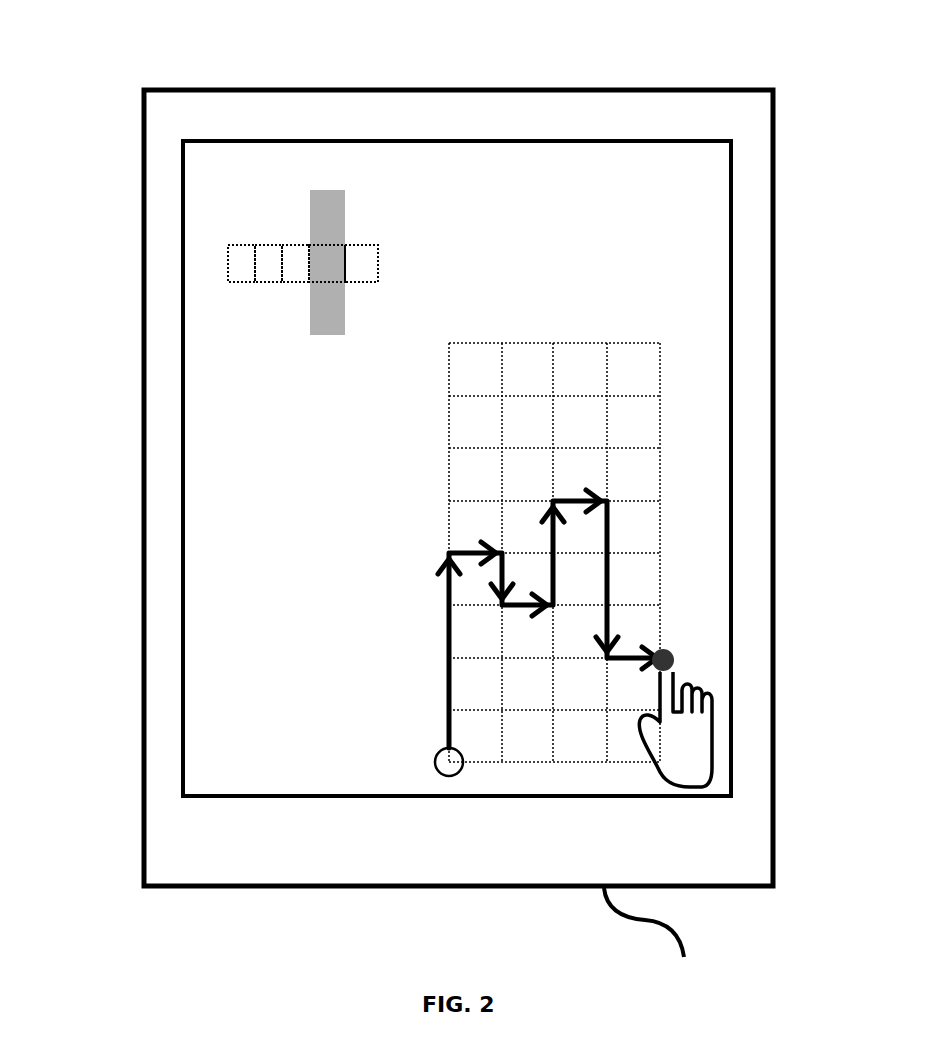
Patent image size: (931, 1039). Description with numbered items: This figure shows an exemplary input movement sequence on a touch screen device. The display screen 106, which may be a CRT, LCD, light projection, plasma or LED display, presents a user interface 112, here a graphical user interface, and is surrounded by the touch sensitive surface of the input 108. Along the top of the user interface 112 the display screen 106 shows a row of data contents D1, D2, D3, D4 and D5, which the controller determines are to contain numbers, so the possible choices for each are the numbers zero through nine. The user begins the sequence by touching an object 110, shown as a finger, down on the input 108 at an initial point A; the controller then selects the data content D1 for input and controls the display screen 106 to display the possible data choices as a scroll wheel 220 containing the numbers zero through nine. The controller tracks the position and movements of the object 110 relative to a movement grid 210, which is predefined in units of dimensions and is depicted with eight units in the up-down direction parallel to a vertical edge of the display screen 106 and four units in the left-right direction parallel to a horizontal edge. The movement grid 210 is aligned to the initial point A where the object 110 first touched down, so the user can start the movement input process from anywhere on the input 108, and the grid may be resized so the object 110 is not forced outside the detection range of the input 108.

The display screen 106 is at (711, 988).
The input 108 is at (234, 850).
The object 110 is at (668, 660).
The user interface 112 is at (234, 788).
The movement grid 210 is at (548, 397).
The scroll wheel 220 is at (317, 190).
The data content D1 is at (233, 245).
The data content D2 is at (268, 245).
The data content D3 is at (282, 245).
The data content D4 is at (318, 276).
The data content D5 is at (357, 245).